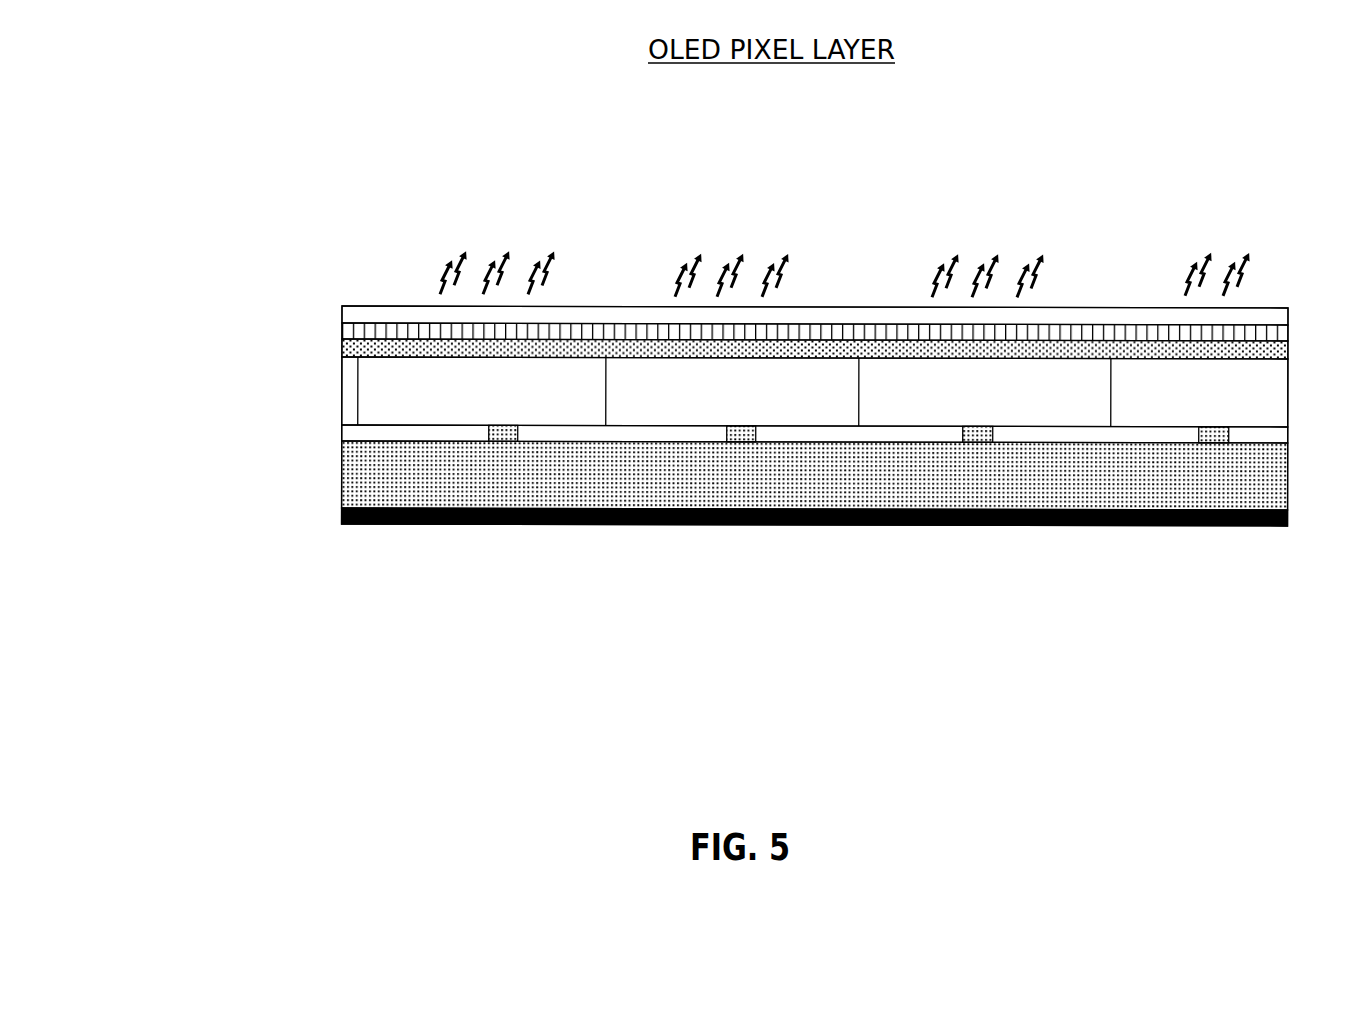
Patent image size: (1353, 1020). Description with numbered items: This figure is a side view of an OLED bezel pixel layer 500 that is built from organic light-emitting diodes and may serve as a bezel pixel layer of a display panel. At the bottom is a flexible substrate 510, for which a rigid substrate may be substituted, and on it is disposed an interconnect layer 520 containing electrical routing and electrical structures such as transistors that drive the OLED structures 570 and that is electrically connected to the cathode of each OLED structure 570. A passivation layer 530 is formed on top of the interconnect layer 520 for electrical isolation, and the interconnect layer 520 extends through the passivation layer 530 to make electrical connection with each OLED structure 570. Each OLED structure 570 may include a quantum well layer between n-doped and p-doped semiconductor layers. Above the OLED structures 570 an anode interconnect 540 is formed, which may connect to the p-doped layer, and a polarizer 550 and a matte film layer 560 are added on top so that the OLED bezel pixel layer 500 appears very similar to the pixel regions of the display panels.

The OLED bezel pixel layer 500 is at (461, 152).
The flexible substrate 510 is at (340, 518).
The interconnect layer 520 is at (360, 475).
The passivation layer 530 is at (350, 434).
The anode interconnect 540 is at (343, 345).
The polarizer 550 is at (342, 328).
The matte film layer 560 is at (344, 306).
The OLED structure 570 is at (520, 404).